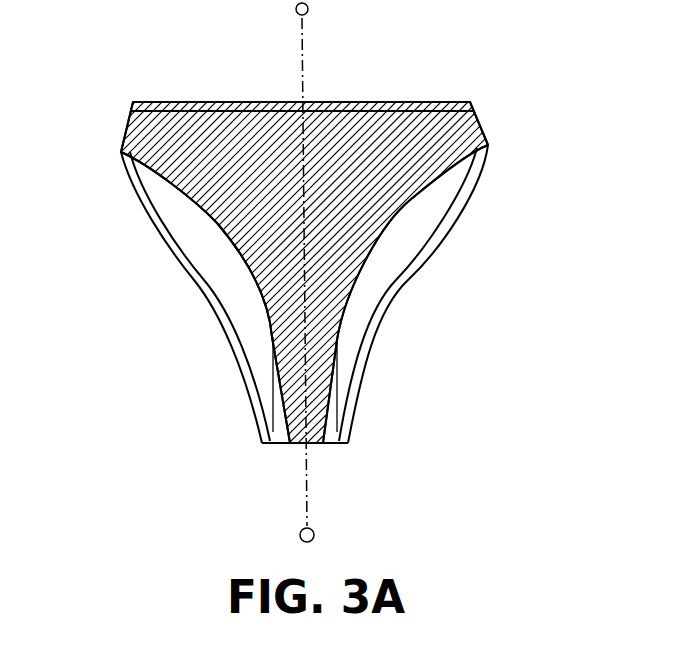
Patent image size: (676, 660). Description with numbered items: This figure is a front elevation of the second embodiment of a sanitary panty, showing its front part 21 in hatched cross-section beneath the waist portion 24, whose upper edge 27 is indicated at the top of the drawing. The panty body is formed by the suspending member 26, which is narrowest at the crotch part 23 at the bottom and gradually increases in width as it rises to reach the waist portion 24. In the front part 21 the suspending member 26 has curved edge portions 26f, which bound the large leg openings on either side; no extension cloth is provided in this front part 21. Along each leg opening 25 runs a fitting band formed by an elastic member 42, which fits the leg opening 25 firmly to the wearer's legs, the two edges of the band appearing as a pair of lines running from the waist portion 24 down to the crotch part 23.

The front part 21 is at (223, 185).
The crotch part 23 is at (332, 446).
The waist portion 24 is at (373, 99).
The leg opening 25 is at (234, 318).
The suspending member 26 is at (486, 131).
The curved edge portions 26f is at (217, 223).
The waist edge 27 is at (254, 101).
The elastic member 42 is at (210, 303).